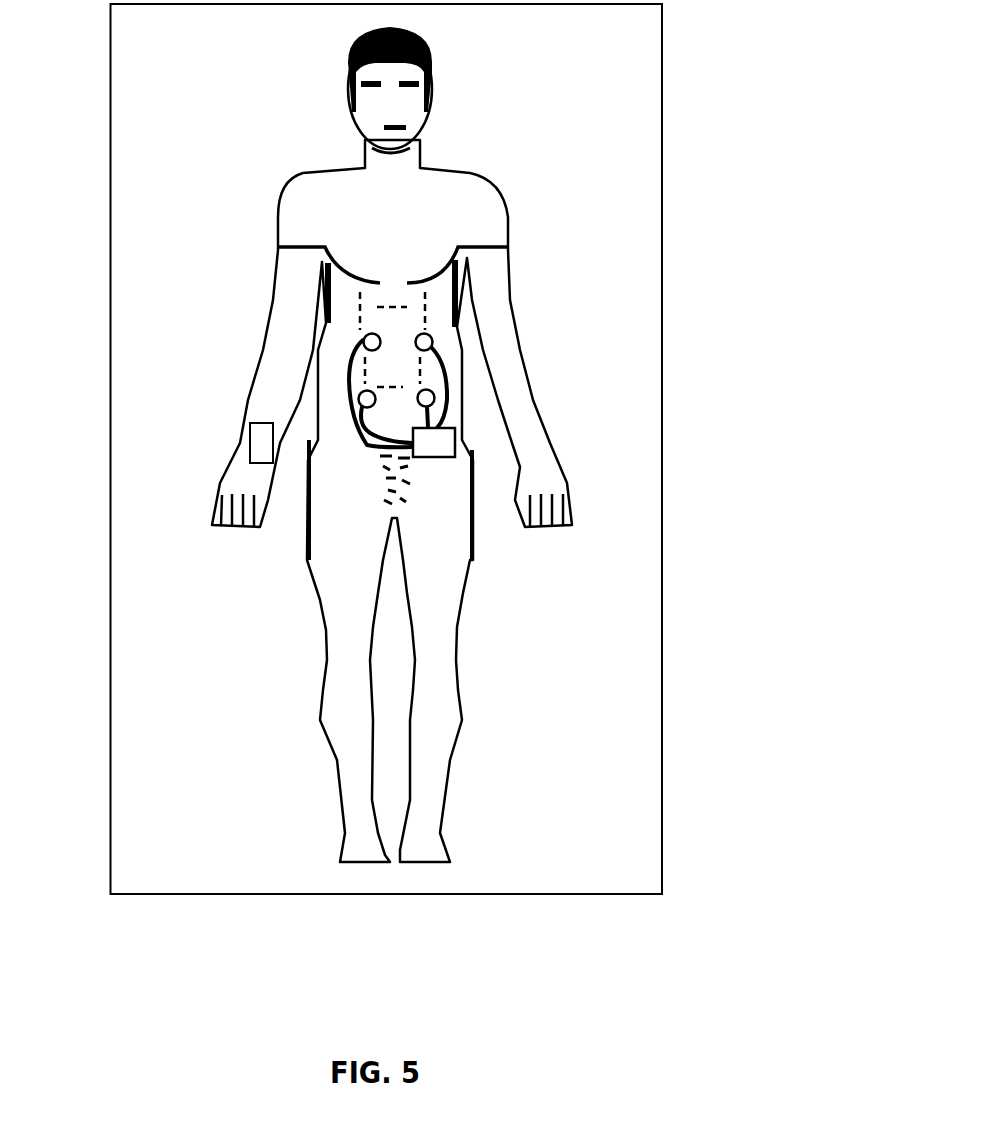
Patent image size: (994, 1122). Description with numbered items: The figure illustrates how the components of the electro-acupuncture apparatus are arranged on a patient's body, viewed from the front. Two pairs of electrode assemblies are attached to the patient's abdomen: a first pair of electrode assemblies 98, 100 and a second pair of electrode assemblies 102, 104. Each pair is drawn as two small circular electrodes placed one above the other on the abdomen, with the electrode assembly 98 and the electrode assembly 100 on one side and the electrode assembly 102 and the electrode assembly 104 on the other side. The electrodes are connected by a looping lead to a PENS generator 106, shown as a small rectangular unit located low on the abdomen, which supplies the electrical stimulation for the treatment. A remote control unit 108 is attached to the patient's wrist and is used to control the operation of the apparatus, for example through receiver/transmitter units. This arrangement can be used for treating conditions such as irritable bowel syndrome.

The electrode assembly 98 is at (363, 340).
The electrode assembly 102 is at (433, 343).
The electrode assembly 100 is at (360, 405).
The electrode assembly 104 is at (448, 412).
The PENS generator 106 is at (455, 443).
The remote control unit 108 is at (270, 449).